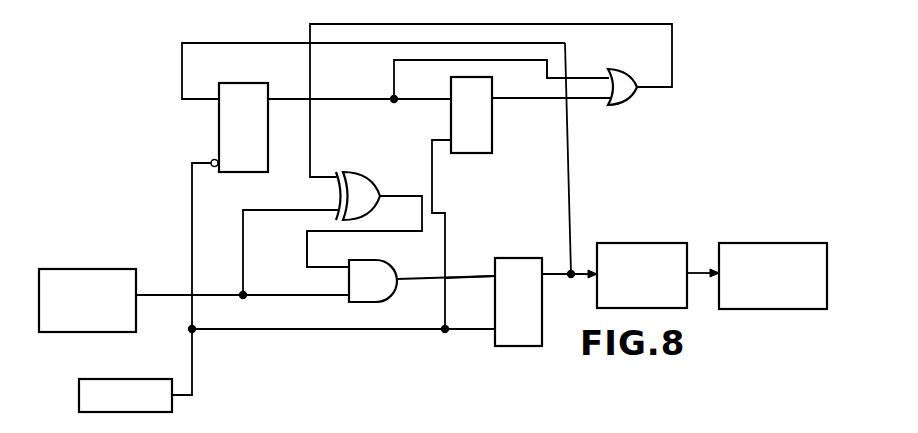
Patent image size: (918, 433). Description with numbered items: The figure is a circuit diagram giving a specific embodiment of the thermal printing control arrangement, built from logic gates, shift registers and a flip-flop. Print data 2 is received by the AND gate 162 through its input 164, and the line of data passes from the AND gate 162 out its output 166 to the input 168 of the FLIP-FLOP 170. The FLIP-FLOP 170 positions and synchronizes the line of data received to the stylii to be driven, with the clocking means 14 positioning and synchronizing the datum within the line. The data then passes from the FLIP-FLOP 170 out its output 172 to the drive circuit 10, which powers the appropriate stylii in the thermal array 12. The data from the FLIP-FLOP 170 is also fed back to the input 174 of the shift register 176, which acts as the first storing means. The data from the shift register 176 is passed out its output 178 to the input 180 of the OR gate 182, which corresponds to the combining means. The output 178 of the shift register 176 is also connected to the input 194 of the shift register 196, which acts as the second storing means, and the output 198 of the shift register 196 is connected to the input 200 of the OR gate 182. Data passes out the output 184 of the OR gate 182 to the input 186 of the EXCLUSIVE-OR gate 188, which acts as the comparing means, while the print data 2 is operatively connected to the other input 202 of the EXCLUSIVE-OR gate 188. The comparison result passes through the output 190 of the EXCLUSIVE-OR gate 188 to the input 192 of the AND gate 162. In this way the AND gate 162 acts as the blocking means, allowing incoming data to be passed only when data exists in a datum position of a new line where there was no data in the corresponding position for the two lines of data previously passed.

The print data source 2 is at (85, 269).
The clocking means 14 is at (140, 377).
The drive circuit 10 is at (632, 243).
The thermal array 12 is at (748, 243).
The shift register 176 is at (238, 82).
The input of shift register 174 is at (373, 71).
The output of shift register 178 is at (359, 88).
The shift register 196 is at (481, 153).
The input of shift register 194 is at (500, 81).
The output of shift register 198 is at (551, 87).
The input of OR gate 180 is at (578, 67).
The OR gate 182 is at (618, 68).
The output of OR gate 184 is at (493, 100).
The input of OR gate 200 is at (583, 158).
The EXCLUSIVE-OR gate 188 is at (367, 178).
The input of EXCLUSIVE-OR gate 186 is at (327, 163).
The input of EXCLUSIVE-OR gate 202 is at (289, 243).
The output of EXCLUSIVE-OR gate 190 is at (364, 221).
The input of AND gate 192 is at (328, 249).
The input of AND gate 164 is at (296, 284).
The AND gate 162 is at (372, 260).
The output of AND gate 166 is at (446, 269).
The input of FLIP-FLOP 168 is at (470, 269).
The FLIP-FLOP 170 is at (522, 258).
The output of FLIP-FLOP 172 is at (567, 257).